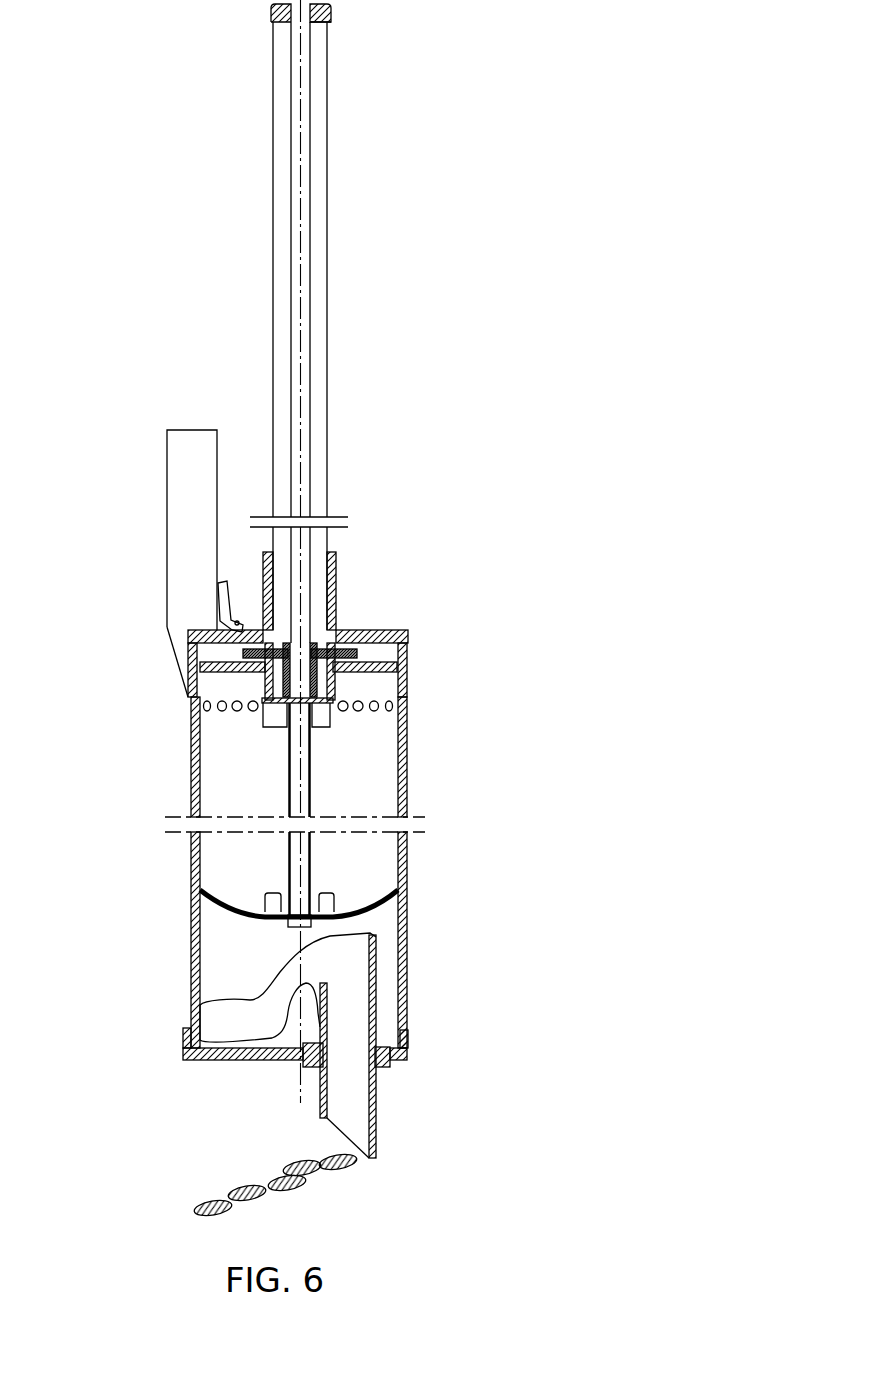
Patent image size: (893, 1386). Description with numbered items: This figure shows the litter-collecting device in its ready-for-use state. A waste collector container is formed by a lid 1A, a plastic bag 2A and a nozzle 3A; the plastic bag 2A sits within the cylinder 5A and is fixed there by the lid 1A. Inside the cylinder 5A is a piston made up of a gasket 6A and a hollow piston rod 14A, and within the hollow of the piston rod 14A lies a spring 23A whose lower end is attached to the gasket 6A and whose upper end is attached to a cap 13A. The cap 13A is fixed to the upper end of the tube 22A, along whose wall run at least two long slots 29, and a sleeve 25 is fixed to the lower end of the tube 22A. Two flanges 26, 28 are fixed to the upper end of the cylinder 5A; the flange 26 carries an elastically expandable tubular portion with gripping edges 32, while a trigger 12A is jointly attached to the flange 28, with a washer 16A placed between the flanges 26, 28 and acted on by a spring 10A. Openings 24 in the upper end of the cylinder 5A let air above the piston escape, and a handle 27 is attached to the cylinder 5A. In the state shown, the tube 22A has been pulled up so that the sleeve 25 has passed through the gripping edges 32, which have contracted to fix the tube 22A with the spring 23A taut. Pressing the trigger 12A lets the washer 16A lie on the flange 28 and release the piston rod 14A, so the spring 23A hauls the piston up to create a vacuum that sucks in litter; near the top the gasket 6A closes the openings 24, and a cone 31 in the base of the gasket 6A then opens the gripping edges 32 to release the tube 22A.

The cap 13A is at (273, 20).
The spring 23A is at (310, 350).
The tube 22A is at (327, 468).
The long slots 29 is at (268, 537).
The handle 27 is at (176, 650).
The trigger 12A is at (221, 588).
The flange 28 is at (187, 629).
The flange 26 is at (187, 677).
The spring 10A is at (407, 673).
The washer 16A is at (387, 655).
The openings 24 is at (262, 700).
The sleeve 25 is at (262, 690).
The gripping edges 32 is at (265, 718).
The piston rod 14A is at (311, 738).
The gasket 6A is at (400, 892).
The cone 31 is at (268, 897).
The cylinder 5A is at (405, 912).
The nozzle 3A is at (383, 970).
The plastic bag 2A is at (285, 1028).
The lid 1A is at (413, 1052).